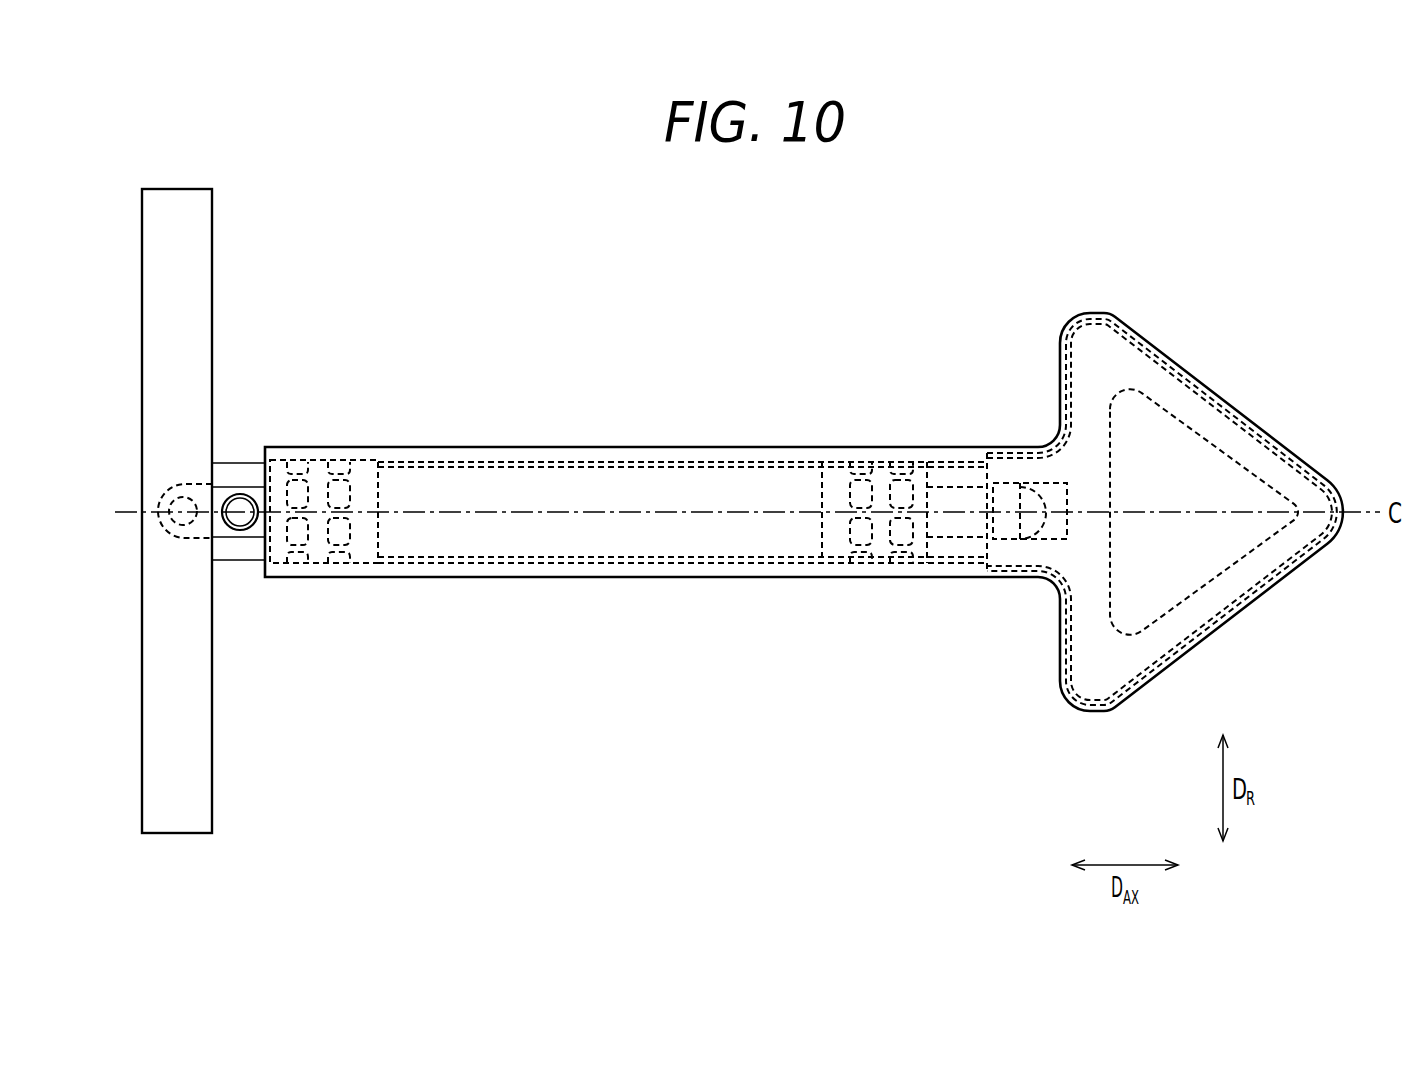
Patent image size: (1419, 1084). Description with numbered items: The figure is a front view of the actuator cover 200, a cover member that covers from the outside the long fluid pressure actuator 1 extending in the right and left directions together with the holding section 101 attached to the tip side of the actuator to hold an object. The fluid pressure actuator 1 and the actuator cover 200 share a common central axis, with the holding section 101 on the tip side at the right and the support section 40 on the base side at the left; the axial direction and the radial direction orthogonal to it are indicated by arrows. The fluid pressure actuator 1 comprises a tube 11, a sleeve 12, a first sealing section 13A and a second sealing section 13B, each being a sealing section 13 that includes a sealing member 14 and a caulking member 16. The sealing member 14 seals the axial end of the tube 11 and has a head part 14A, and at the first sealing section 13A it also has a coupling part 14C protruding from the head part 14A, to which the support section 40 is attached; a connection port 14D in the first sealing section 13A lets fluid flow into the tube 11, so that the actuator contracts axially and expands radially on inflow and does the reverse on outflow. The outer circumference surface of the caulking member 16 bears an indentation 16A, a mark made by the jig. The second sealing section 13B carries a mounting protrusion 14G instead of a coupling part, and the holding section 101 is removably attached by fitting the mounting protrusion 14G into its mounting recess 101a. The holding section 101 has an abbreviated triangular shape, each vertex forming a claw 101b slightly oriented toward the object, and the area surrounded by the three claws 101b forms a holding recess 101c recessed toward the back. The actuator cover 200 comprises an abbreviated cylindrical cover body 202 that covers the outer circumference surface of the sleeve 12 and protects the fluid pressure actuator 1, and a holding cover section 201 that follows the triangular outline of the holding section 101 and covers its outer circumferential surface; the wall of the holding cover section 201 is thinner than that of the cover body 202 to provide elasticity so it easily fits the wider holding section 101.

The fluid pressure actuator 1 is at (751, 506).
The tube 11 is at (535, 487).
The sleeve 12 is at (622, 463).
The sealing section 13 is at (628, 523).
The first sealing section 13A is at (355, 518).
The second sealing section 13B is at (884, 568).
The sealing member 14 is at (585, 522).
The head part 14A is at (232, 480).
The coupling part 14C is at (180, 527).
The connection port 14D is at (237, 520).
The mounting protrusion 14G is at (1028, 541).
The caulking member 16 is at (313, 460).
The indentation 16A is at (345, 490).
The support section 40 is at (177, 675).
The holding section 101 is at (1221, 597).
The mounting recess 101a is at (1051, 489).
The claw 101b is at (1095, 343).
The holding recess 101c is at (1202, 480).
The actuator cover 200 is at (832, 512).
The holding cover section 201 is at (1265, 608).
The cover body 202 is at (553, 580).